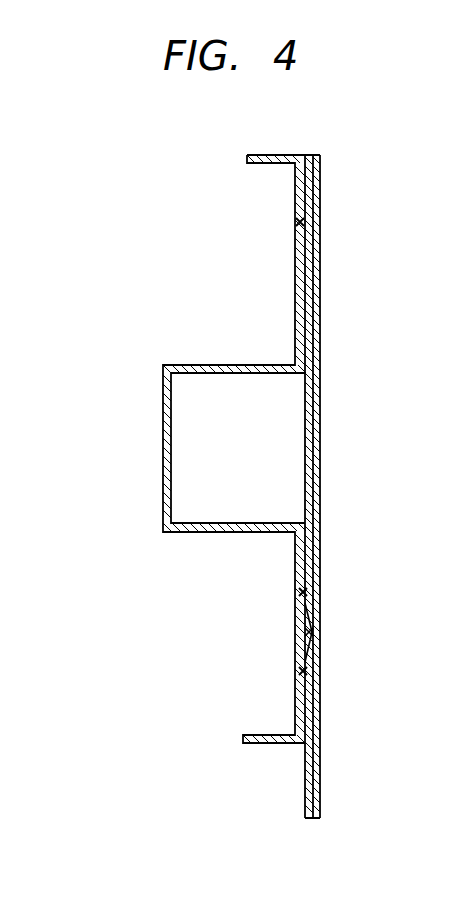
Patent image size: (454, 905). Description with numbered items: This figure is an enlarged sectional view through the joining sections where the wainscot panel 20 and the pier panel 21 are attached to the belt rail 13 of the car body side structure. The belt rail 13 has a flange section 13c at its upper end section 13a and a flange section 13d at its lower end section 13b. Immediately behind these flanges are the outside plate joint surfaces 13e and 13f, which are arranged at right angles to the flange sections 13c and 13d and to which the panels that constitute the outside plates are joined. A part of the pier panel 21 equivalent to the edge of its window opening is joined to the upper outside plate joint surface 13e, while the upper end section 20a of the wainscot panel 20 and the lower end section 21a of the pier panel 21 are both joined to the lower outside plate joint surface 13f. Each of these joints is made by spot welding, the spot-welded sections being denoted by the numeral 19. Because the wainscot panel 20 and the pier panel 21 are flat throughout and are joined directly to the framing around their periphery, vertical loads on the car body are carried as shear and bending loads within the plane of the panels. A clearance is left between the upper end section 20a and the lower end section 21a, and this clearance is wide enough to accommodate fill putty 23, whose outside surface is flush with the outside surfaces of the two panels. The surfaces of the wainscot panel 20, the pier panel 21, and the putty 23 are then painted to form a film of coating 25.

The belt rail 13 is at (178, 368).
The upper end section 13a is at (296, 153).
The lower end section 13b is at (305, 818).
The flange section 13c is at (268, 156).
The flange section 13d is at (262, 745).
The outside plate joint surface 13e is at (312, 278).
The outside plate joint surface 13f is at (312, 700).
The spot-welded section 19 is at (297, 224).
The wainscot panel 20 is at (322, 776).
The upper end section 20a is at (318, 655).
The pier panel 21 is at (313, 392).
The lower end section 21a is at (318, 607).
The putty 23 is at (318, 631).
The film of coating 25 is at (322, 510).